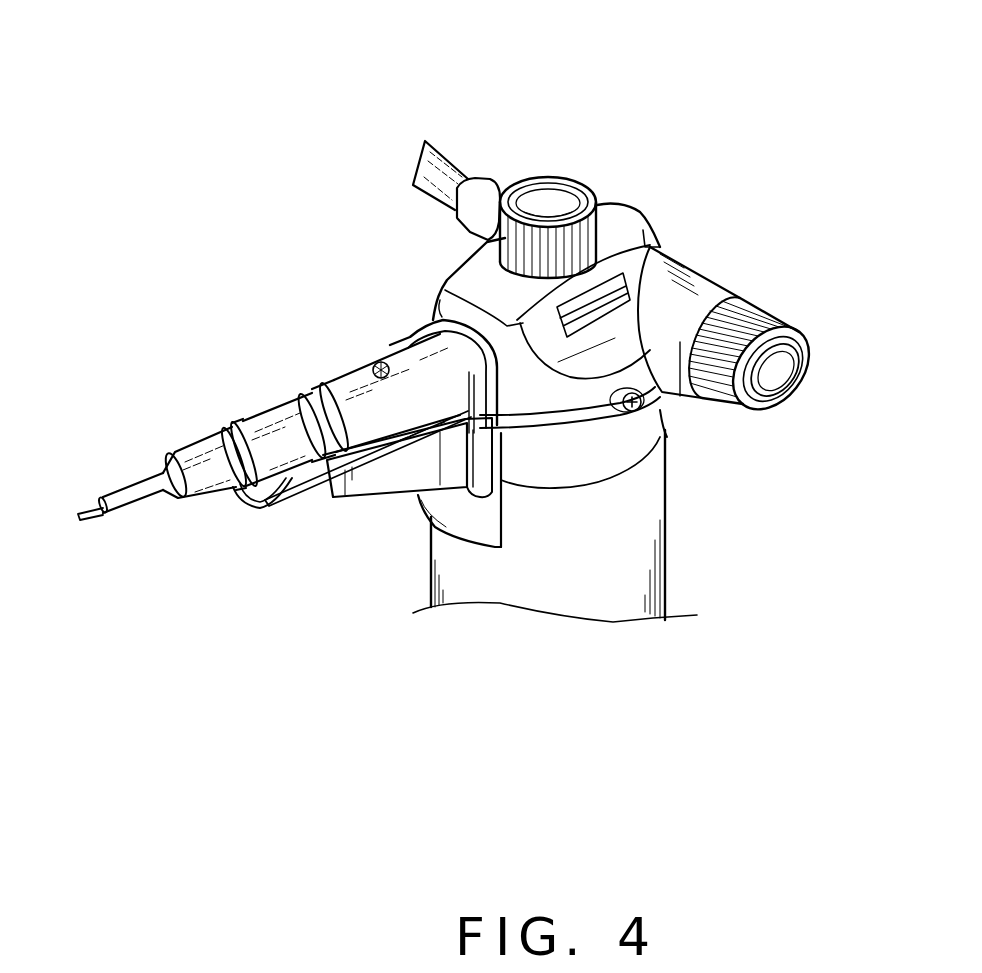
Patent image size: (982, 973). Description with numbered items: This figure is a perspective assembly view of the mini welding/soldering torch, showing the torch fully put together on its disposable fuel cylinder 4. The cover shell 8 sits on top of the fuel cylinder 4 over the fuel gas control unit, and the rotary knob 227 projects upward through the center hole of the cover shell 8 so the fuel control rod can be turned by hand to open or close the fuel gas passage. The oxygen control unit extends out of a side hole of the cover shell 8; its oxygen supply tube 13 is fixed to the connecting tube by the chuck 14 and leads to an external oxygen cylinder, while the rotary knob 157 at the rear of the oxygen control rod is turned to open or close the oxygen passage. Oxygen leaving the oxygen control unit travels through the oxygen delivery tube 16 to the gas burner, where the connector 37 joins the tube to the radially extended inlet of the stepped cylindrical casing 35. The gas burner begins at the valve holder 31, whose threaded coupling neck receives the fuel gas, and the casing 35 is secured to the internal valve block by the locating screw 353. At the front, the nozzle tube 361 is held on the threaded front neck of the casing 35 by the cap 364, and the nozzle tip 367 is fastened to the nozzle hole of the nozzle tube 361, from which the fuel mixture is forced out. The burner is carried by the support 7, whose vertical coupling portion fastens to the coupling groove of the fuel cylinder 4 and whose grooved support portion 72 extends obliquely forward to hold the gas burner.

The oxygen supply tube 13 is at (447, 165).
The chuck 14 is at (487, 193).
The rotary knob 227 is at (551, 190).
The cover shell 8 is at (627, 213).
The rotary knob 157 is at (770, 323).
The disposable fuel cylinder 4 is at (647, 560).
The valve holder 31 is at (407, 350).
The locating screw 353 is at (367, 357).
The stepped cylindrical casing 35 is at (259, 425).
The cap 364 is at (198, 450).
The nozzle tube 361 is at (123, 496).
The nozzle tip 367 is at (80, 512).
The connector 37 is at (229, 497).
The oxygen delivery tube 16 is at (282, 495).
The grooved support portion 72 is at (315, 485).
The support 7 is at (376, 484).